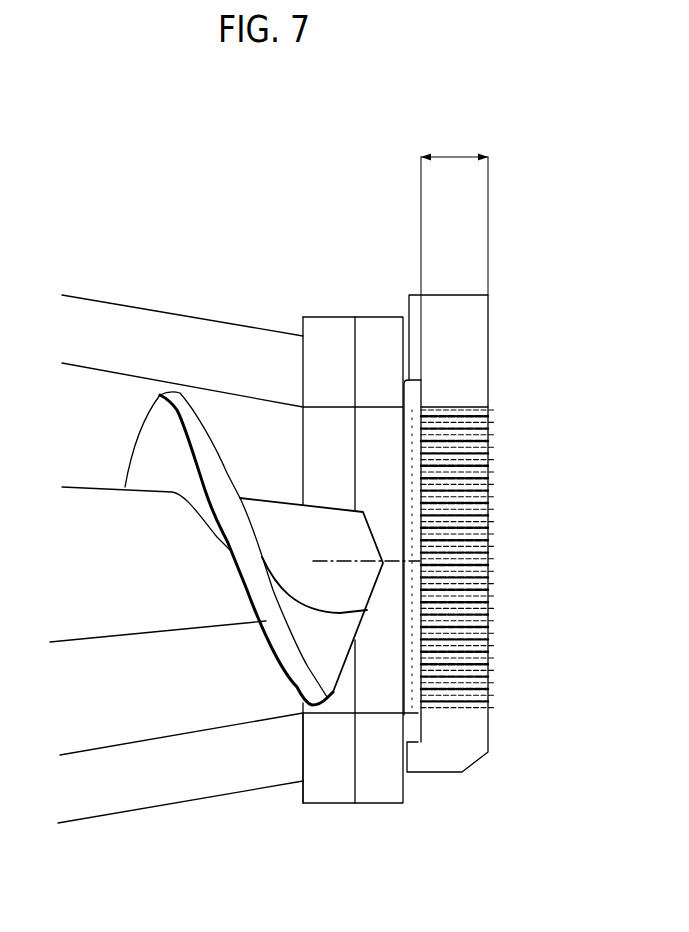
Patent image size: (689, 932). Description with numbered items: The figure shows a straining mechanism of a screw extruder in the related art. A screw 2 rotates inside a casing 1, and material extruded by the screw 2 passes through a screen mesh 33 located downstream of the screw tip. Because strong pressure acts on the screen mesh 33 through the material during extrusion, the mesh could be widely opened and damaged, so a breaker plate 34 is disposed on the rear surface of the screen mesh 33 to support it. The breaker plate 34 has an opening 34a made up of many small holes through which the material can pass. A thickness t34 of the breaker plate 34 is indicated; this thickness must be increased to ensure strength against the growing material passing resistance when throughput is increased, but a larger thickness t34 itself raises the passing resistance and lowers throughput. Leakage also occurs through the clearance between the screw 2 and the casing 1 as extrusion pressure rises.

The casing 1 is at (88, 748).
The screw 2 is at (143, 420).
The screen mesh 33 is at (420, 665).
The breaker plate 34 is at (428, 760).
The opening 34a is at (487, 508).
The thickness of the breaker plate t34 is at (457, 155).